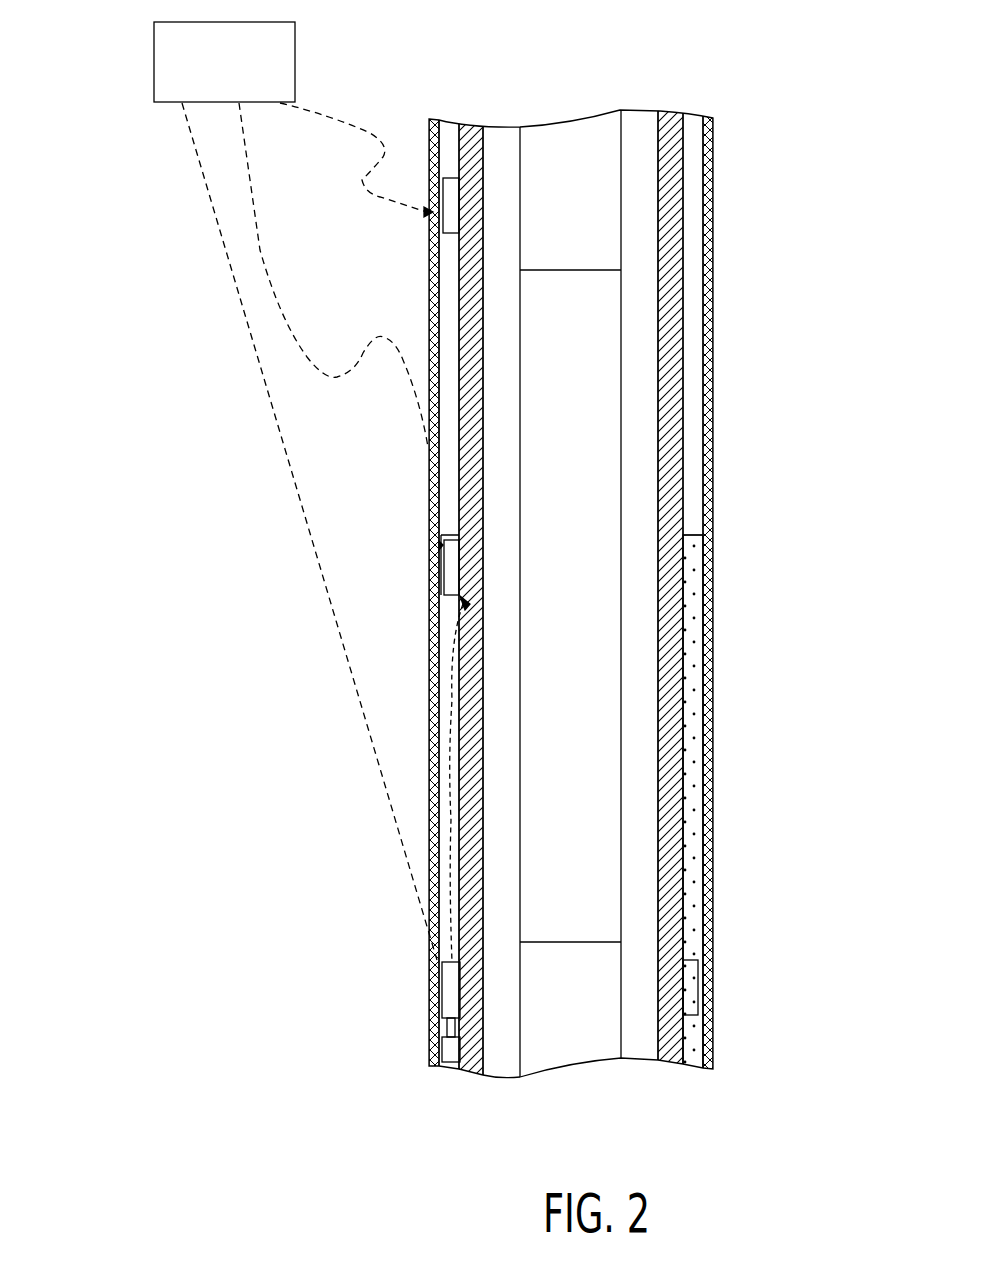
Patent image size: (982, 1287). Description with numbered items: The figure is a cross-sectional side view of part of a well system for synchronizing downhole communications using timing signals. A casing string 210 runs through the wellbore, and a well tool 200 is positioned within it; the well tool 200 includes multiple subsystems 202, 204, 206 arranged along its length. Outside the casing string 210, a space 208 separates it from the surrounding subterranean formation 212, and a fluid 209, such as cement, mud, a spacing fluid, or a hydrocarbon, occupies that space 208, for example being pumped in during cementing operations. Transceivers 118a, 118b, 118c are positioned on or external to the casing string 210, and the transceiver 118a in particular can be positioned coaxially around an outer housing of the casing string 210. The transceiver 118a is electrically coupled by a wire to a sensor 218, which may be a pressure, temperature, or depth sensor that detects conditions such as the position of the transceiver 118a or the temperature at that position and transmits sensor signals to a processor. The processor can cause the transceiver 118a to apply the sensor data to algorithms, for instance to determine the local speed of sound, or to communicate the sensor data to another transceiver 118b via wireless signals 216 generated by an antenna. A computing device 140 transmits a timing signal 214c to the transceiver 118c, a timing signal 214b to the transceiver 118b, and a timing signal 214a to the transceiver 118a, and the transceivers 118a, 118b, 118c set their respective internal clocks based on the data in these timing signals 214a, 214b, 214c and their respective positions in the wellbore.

The computing device 140 is at (154, 62).
The well tool 200 is at (613, 578).
The subsystem 202 is at (557, 140).
The subsystem 204 is at (580, 1050).
The subsystem 206 is at (601, 732).
The space 208 is at (693, 358).
The fluid 209 is at (693, 804).
The casing string 210 is at (670, 480).
The subterranean formation 212 is at (715, 623).
The timing signal 214a is at (342, 638).
The timing signal 214b is at (337, 377).
The timing signal 214c is at (370, 197).
The wireless signals 216 is at (422, 868).
The sensor 218 is at (440, 1058).
The transceiver 118a is at (440, 995).
The transceiver 118b is at (443, 575).
The transceiver 118c is at (450, 177).